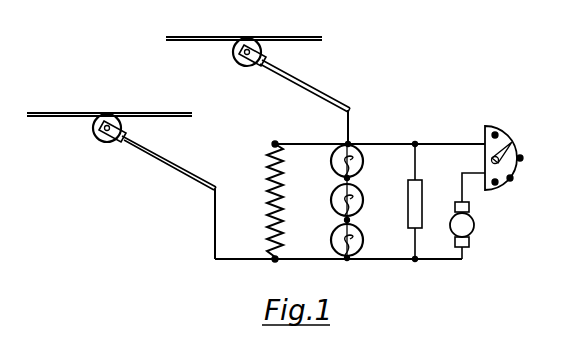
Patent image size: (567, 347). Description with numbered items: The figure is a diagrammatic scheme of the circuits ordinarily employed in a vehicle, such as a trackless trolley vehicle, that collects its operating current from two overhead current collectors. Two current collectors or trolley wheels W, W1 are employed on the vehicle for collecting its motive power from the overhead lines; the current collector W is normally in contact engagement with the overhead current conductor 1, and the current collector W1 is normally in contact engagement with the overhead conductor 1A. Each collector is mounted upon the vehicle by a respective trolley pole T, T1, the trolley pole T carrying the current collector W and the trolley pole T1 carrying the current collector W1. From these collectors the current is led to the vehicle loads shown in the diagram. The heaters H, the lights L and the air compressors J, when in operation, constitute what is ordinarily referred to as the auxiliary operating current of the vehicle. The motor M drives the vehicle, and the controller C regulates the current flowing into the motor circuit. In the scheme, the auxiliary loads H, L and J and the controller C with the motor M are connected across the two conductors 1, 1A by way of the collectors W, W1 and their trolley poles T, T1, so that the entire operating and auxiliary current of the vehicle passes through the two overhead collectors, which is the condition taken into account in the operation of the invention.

The overhead current conductor 1 is at (39, 112).
The overhead conductor 1A is at (187, 38).
The current collector W is at (123, 129).
The current collector W1 is at (265, 52).
The trolley pole T is at (198, 174).
The trolley pole T1 is at (341, 104).
The heaters H is at (285, 185).
The lights L is at (362, 202).
The air compressors J is at (426, 200).
The controller C is at (528, 159).
The motor M is at (475, 226).